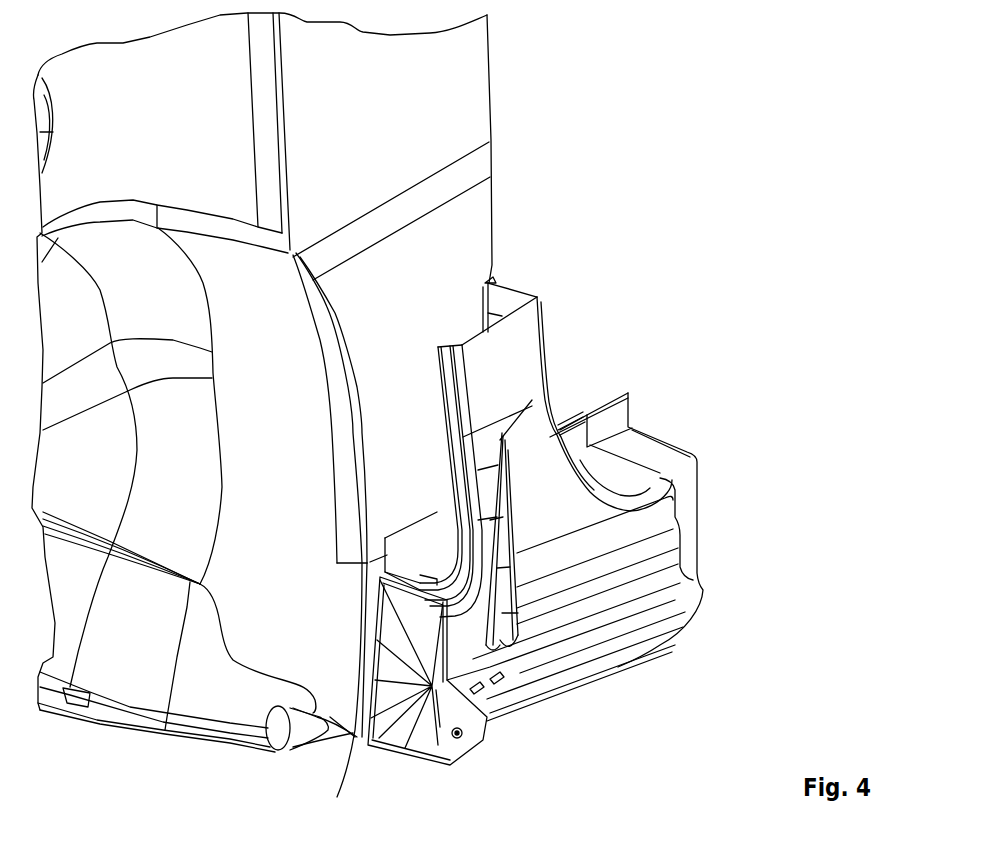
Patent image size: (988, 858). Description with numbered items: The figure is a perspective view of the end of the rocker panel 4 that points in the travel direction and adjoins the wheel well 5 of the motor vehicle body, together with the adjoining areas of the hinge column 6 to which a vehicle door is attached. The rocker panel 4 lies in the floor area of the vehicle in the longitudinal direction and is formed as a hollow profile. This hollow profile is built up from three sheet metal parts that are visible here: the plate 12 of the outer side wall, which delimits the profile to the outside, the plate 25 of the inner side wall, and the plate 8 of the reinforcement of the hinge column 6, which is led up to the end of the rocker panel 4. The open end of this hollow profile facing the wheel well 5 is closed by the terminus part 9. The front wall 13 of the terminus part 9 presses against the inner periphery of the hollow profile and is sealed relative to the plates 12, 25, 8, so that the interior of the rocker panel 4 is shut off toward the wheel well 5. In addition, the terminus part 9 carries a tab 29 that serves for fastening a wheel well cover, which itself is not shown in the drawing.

The rocker panel 4 is at (682, 638).
The wheel well 5 is at (307, 302).
The hinge column 6 is at (520, 355).
The plate of the reinforcement of the hinge column 8 is at (437, 553).
The terminus part 9 is at (412, 728).
The plate of the outer side wall 12 is at (493, 727).
The front wall 13 is at (435, 735).
The plate of the inner side wall 25 is at (357, 725).
The tab 29 is at (459, 737).